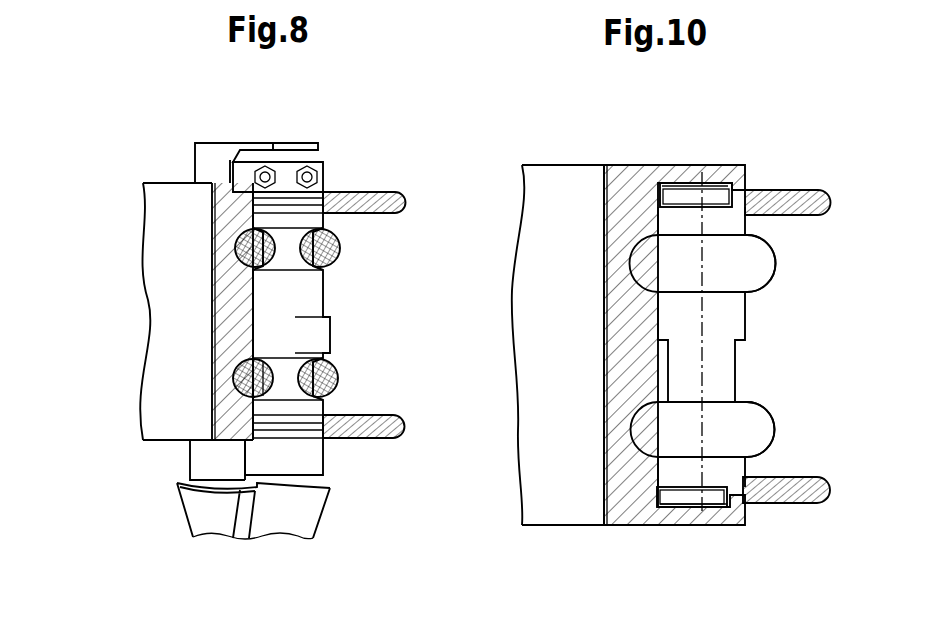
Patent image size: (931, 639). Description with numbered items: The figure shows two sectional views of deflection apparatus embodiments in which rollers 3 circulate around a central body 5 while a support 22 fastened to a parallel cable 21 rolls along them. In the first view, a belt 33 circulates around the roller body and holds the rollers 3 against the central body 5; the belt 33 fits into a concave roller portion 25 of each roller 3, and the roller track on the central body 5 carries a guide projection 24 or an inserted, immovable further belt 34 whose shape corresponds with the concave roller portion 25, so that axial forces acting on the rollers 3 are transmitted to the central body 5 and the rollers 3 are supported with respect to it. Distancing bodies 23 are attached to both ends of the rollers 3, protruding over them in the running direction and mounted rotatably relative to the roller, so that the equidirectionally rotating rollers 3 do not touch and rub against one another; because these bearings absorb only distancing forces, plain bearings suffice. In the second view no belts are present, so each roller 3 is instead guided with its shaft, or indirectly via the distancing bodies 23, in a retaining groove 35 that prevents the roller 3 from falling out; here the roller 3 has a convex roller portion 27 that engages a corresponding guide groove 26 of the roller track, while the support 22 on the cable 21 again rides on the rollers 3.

In FIG. 8, the roller 3 is at (314, 303).
In FIG. 10, the roller 3 is at (724, 262).
In FIG. 8, the central body 5 is at (116, 293).
In FIG. 8, the cable 21 is at (370, 200).
In FIG. 10, the cable 21 is at (778, 200).
In FIG. 8, the support 22 is at (280, 145).
In FIG. 8, the distancing body 23 is at (318, 198).
In FIG. 10, the distancing body 23 is at (724, 194).
In FIG. 8, the guide projection 24 is at (243, 250).
In FIG. 8, the concave roller portion 25 is at (286, 258).
In FIG. 10, the guide groove 26 is at (620, 263).
In FIG. 10, the convex roller portion 27 is at (755, 418).
In FIG. 8, the belt 33 is at (342, 247).
In FIG. 8, the further belt 34 is at (179, 305).
In FIG. 10, the retaining groove 35 is at (690, 172).